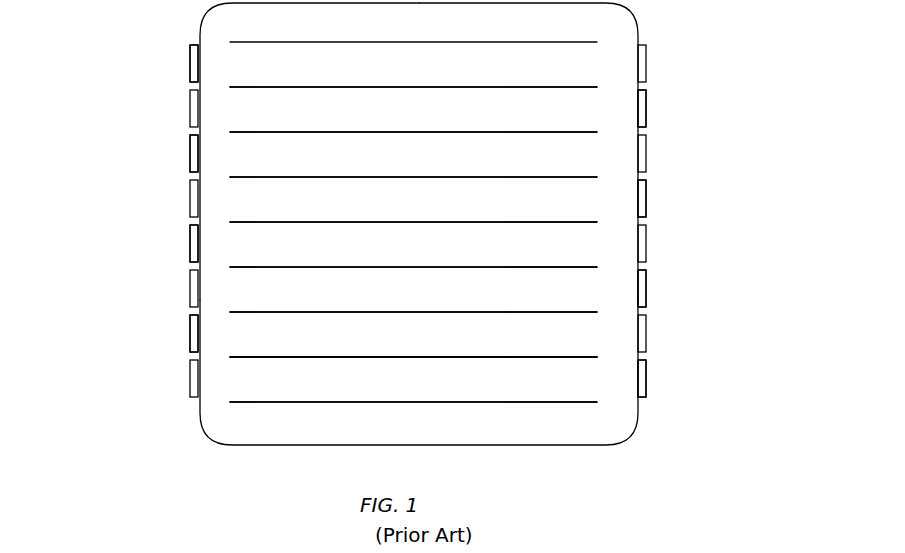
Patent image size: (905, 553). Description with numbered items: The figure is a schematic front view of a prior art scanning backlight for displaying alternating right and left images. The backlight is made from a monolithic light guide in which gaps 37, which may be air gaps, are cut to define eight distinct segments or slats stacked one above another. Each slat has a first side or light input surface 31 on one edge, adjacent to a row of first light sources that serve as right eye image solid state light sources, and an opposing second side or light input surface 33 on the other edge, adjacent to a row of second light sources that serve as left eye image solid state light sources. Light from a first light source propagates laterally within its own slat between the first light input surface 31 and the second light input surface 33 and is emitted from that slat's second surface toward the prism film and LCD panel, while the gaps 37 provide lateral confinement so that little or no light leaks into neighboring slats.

The first side or light input surface 31 is at (637, 26).
The second side or light input surface 33 is at (201, 30).
The gaps 37 is at (252, 357).